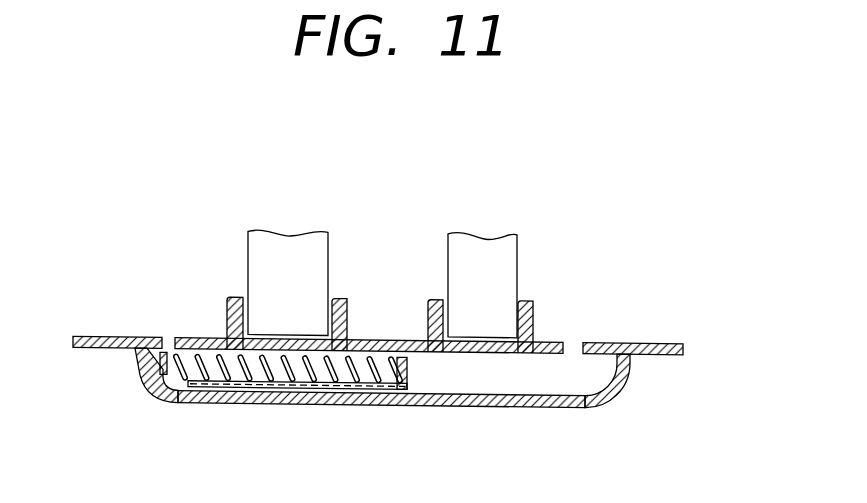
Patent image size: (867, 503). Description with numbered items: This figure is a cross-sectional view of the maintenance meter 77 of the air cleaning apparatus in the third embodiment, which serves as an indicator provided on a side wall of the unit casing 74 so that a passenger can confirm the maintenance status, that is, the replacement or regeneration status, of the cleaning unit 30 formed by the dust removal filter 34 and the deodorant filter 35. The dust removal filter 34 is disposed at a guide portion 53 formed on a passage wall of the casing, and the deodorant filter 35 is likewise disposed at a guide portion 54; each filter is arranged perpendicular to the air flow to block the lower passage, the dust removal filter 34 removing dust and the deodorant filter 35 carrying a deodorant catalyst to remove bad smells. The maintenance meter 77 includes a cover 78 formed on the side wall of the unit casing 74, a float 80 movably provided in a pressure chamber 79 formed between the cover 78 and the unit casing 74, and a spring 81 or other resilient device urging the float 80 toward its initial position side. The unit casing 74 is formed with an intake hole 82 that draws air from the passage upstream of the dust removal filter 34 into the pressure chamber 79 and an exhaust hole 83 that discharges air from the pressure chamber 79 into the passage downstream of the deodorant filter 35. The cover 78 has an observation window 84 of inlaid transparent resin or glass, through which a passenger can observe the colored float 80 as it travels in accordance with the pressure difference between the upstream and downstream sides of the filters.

The cleaning unit 30 is at (382, 216).
The dust removal filter 34 is at (482, 246).
The deodorant filter 35 is at (290, 242).
The guide portion 53 is at (527, 299).
The guide portion 54 is at (235, 299).
The unit casing 74 is at (83, 352).
The maintenance meter 77 is at (414, 415).
The cover 78 is at (628, 376).
The pressure chamber 79 is at (530, 368).
The float 80 is at (371, 392).
The spring 81 is at (242, 393).
The intake hole 82 is at (581, 339).
The exhaust hole 83 is at (167, 345).
The observation window 84 is at (518, 396).